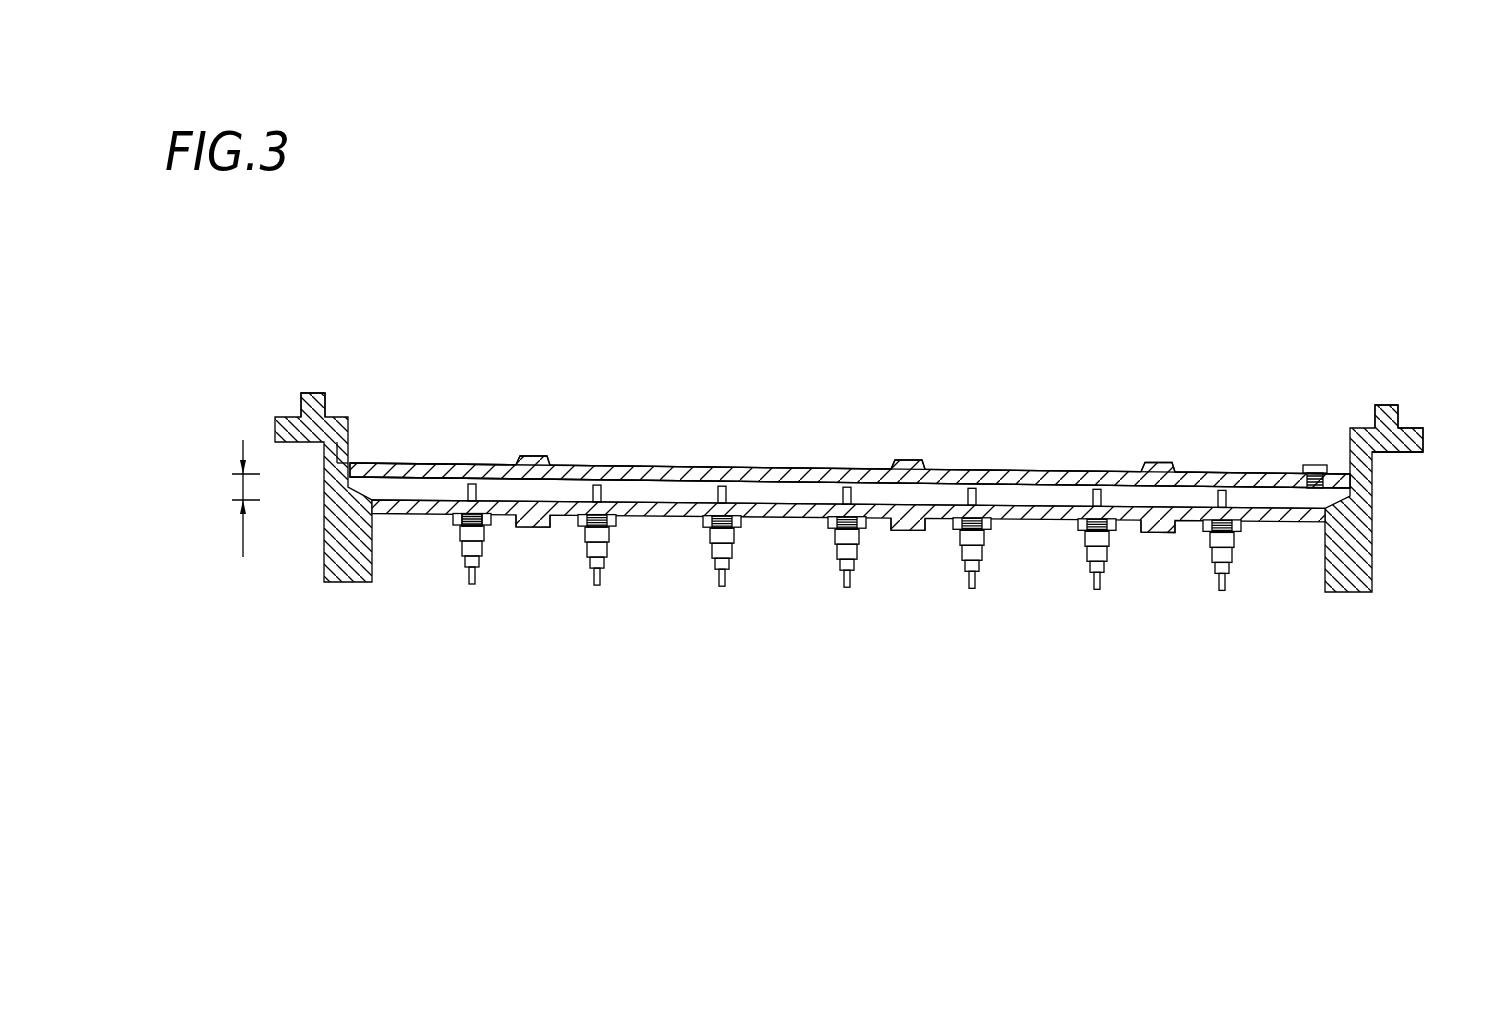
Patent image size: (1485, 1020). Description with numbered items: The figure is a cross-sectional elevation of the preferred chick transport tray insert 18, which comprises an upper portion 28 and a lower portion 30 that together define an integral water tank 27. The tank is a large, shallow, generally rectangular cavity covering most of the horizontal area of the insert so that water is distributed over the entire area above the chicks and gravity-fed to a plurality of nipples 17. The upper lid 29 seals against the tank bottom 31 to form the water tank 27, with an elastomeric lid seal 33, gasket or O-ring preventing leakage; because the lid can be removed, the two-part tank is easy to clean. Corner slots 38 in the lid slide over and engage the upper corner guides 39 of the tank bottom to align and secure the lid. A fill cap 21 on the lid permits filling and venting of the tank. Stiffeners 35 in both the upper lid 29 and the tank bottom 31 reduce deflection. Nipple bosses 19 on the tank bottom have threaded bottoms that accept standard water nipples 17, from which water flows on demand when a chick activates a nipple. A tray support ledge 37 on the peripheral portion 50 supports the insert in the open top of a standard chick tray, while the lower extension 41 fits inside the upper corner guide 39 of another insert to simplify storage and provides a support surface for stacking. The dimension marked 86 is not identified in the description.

The nipple 17 is at (582, 556).
The tray insert 18 is at (576, 325).
The nipple boss 19 is at (455, 519).
The fill cap 21 is at (1305, 466).
The water tank 27 is at (1043, 497).
The upper portion 28 is at (678, 432).
The upper lid 29 is at (757, 467).
The lower portion 30 is at (1083, 634).
The tank bottom 31 is at (775, 519).
The lid seal 33 is at (348, 468).
The stiffeners 35 is at (910, 461).
The tray support ledge 37 is at (1415, 452).
The corner slots 38 is at (1400, 430).
The upper corner guides 39 is at (310, 393).
The lower extension 41 is at (1372, 553).
The peripheral portion 50 is at (240, 413).
The gap distance 86 is at (237, 485).